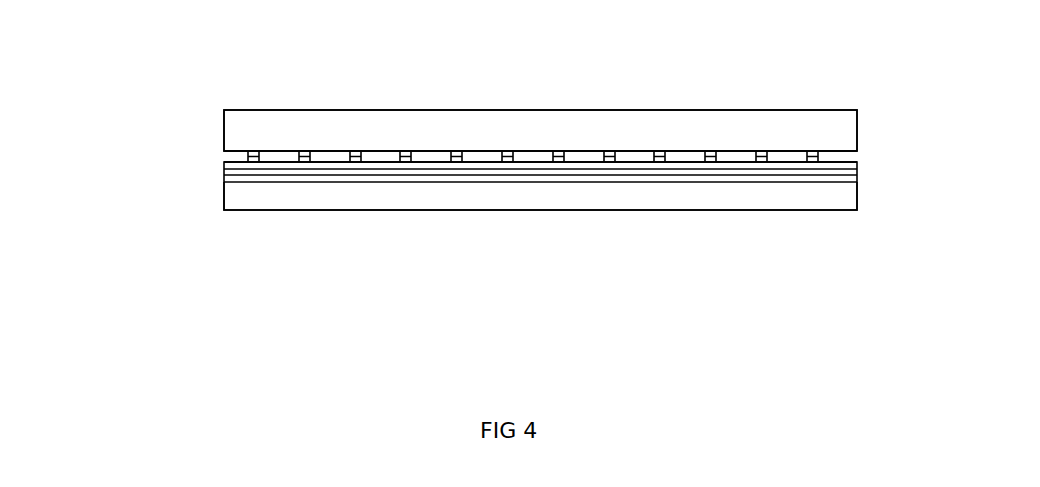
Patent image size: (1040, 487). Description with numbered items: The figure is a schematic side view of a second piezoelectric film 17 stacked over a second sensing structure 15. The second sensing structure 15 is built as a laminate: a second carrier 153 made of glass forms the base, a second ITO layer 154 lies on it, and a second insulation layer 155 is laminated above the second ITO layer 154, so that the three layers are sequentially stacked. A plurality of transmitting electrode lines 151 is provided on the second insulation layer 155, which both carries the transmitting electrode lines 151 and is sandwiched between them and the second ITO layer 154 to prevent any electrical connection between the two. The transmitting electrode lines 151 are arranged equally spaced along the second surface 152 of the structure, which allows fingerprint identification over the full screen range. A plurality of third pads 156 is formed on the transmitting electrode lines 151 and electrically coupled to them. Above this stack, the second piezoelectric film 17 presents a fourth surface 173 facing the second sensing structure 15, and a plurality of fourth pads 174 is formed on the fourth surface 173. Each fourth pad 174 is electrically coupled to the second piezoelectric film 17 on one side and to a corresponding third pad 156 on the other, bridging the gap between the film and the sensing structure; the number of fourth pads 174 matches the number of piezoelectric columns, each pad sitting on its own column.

The second sensing structure 15 is at (104, 166).
The second piezoelectric film 17 is at (563, 140).
The transmitting electrode lines 151 is at (238, 162).
The second surface 152 is at (687, 150).
The second carrier 153 is at (521, 195).
The second ITO layer 154 is at (237, 179).
The second insulation layer 155 is at (237, 172).
The third pads 156 is at (857, 161).
The fourth surface 173 is at (637, 163).
The fourth pads 174 is at (818, 154).